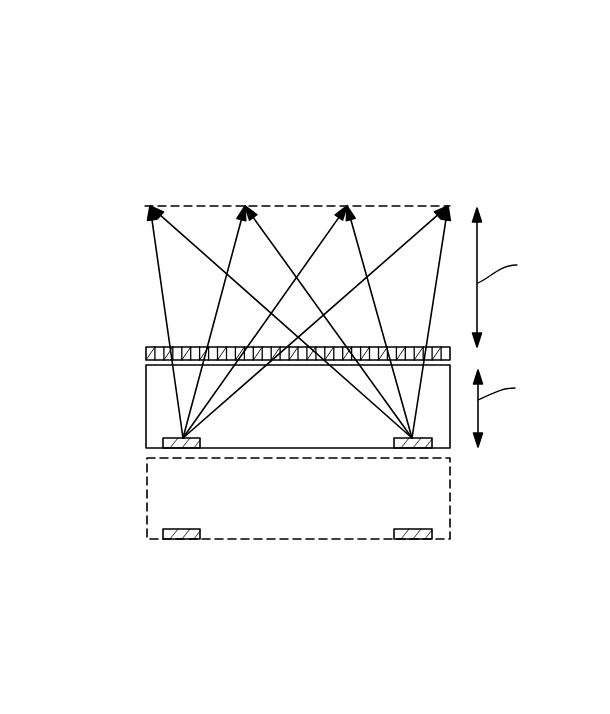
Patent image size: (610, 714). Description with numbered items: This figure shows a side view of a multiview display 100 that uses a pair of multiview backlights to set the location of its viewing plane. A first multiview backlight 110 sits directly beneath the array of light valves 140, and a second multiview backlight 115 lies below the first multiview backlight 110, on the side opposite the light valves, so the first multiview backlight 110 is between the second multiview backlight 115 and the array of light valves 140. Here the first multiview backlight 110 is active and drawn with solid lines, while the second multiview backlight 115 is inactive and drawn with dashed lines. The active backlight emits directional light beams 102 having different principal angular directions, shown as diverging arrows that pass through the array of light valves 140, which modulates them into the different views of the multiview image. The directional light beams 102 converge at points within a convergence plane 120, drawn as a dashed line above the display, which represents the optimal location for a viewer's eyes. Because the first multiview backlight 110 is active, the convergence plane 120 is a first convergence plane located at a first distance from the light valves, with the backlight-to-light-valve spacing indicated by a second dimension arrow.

The multiview display 100 is at (82, 124).
The directional light beams 102 is at (153, 258).
The first multiview backlight 110 is at (146, 422).
The second multiview backlight 115 is at (145, 500).
The convergence plane 120 is at (172, 204).
The array of light valves 140 is at (146, 352).